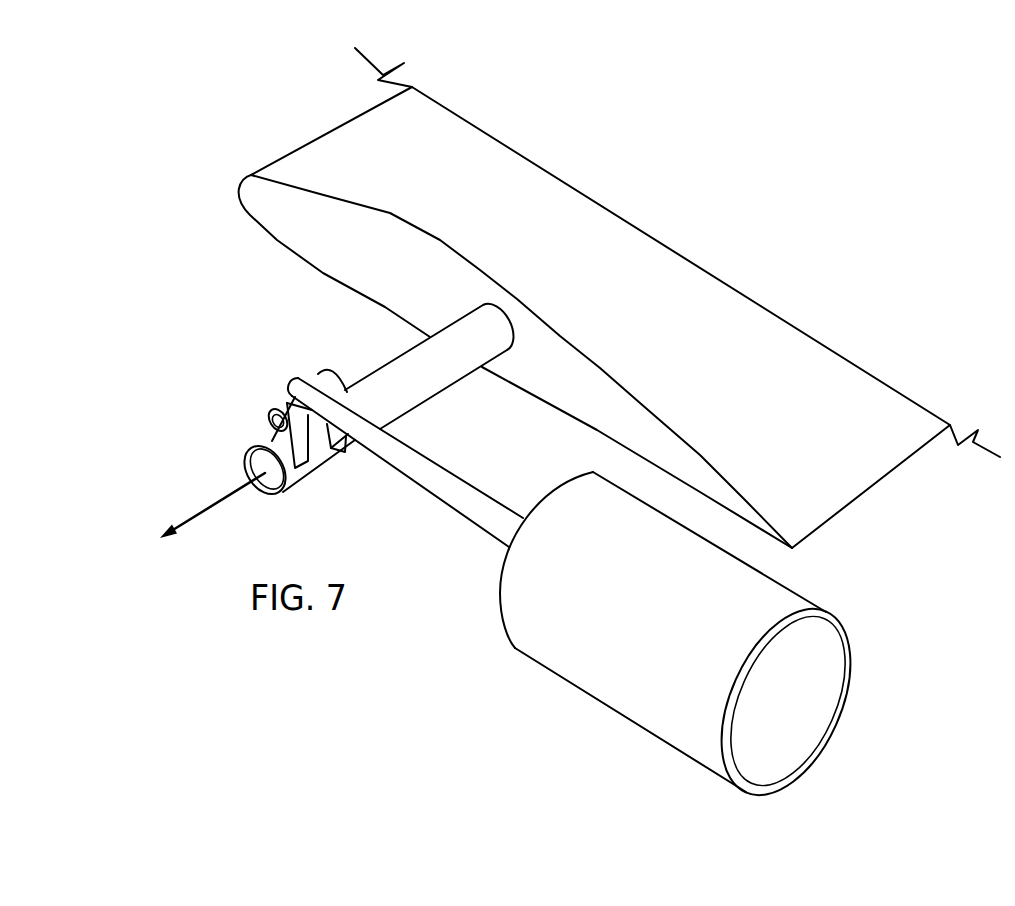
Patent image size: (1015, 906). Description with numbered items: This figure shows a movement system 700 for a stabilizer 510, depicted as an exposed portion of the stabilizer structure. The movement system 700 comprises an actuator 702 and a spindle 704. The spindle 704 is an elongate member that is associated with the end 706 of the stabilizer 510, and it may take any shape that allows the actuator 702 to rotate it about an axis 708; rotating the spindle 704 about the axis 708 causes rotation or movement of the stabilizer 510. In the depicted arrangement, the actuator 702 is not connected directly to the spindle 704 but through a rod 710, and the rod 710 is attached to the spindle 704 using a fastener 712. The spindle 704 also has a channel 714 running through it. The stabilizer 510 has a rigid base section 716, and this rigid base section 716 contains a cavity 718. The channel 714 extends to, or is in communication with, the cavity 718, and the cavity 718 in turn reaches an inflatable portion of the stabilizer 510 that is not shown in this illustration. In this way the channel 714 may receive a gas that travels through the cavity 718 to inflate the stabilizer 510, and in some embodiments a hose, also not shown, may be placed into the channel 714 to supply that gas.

The stabilizer 510 is at (303, 146).
The movement system 700 is at (757, 194).
The actuator 702 is at (617, 712).
The spindle 704 is at (393, 359).
The end 706 is at (288, 240).
The axis 708 is at (210, 503).
The rod 710 is at (413, 483).
The fastener 712 is at (272, 423).
The channel 714 is at (262, 498).
The rigid base section 716 is at (548, 178).
The cavity 718 is at (618, 228).